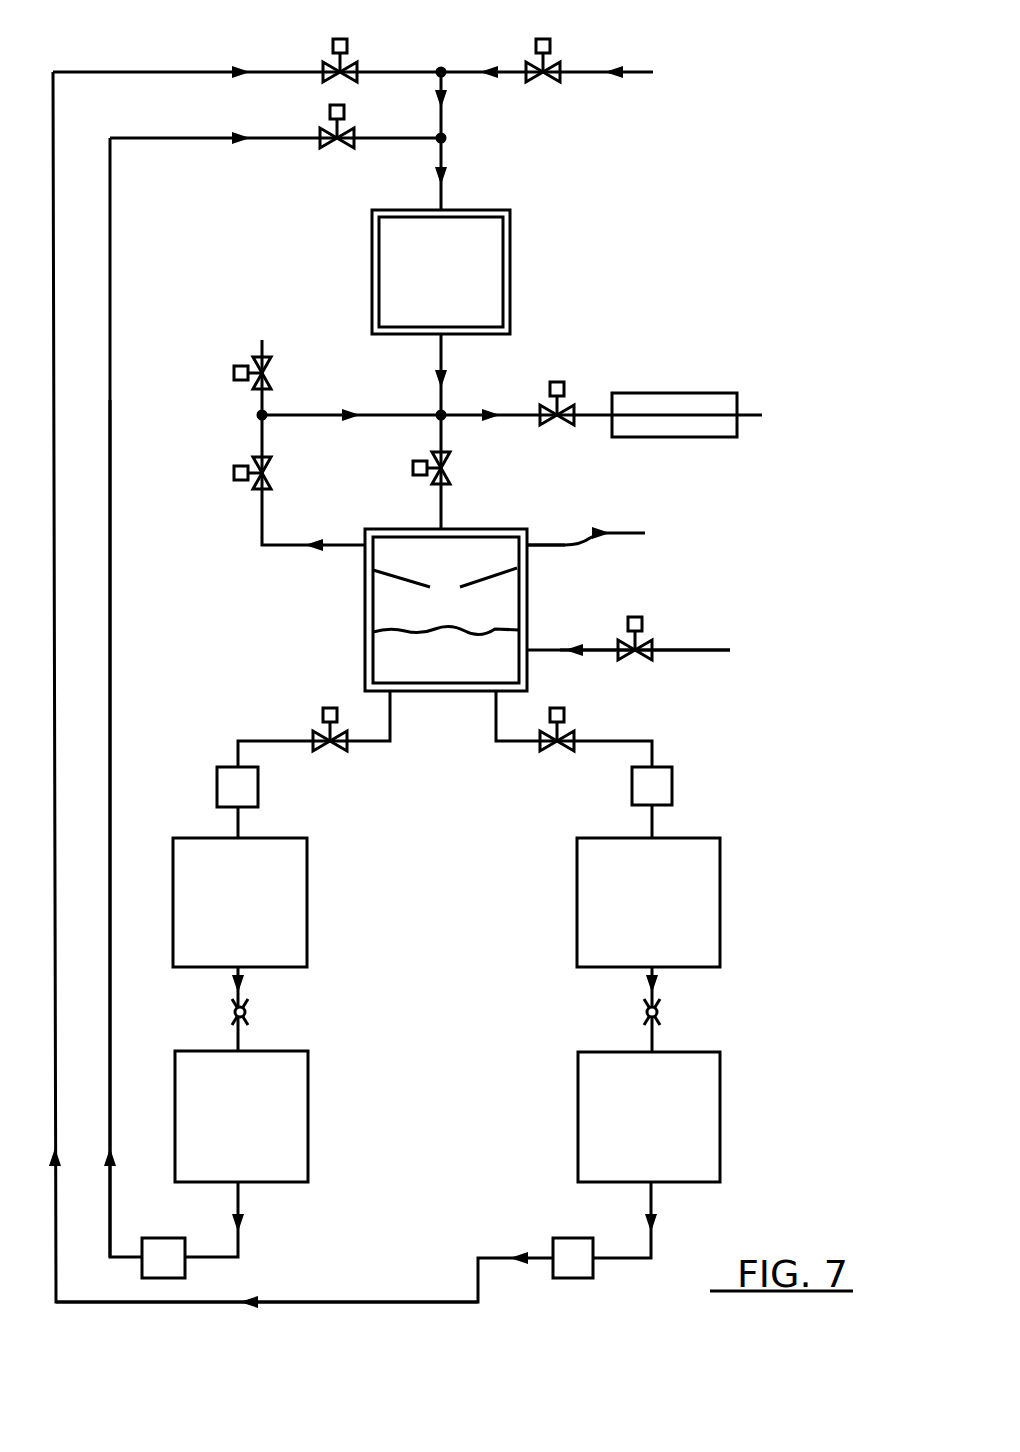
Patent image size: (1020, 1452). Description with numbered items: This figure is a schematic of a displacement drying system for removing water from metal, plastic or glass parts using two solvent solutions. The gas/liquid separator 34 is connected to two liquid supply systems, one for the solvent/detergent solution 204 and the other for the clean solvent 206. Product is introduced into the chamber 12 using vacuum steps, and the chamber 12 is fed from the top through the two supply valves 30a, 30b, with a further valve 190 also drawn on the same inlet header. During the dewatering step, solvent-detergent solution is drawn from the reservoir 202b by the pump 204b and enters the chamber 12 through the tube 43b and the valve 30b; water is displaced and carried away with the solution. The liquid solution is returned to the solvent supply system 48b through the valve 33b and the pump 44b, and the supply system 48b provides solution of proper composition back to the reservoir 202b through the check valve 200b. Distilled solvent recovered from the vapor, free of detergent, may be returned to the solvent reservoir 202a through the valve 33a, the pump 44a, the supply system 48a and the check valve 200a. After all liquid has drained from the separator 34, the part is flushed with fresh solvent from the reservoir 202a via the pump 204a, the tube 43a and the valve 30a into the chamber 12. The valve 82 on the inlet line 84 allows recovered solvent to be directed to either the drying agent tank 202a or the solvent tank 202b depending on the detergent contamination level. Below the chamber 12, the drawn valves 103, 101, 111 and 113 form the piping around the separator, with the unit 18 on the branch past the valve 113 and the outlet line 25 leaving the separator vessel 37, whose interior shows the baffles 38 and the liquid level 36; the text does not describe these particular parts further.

The chamber 12 is at (512, 252).
The condenser 18 is at (712, 374).
The vapor outlet line 25 is at (622, 522).
The valve 30a is at (330, 122).
The valve 30b is at (332, 58).
The valve 33a is at (320, 738).
The valve 33b is at (567, 738).
The gas/liquid separator 34 is at (352, 626).
The liquid solvent 36 is at (507, 607).
The separator 37 is at (510, 529).
The baffles 38 is at (505, 560).
The tube 43a is at (112, 1016).
The tube 43b is at (420, 1304).
The pump 44a is at (217, 780).
The pump 44b is at (672, 785).
The solvent supply system 48a is at (307, 856).
The solvent supply system 48b is at (720, 900).
The valve 82 is at (648, 634).
The inlet line 84 is at (598, 654).
The valve 101 is at (248, 470).
The valve 103 is at (250, 368).
The valve 111 is at (456, 466).
The valve 113 is at (547, 408).
The valve 190 is at (536, 58).
The check valve 200a is at (258, 1010).
The check valve 200b is at (668, 1010).
The solvent reservoir 202a is at (308, 1148).
The reservoir 202b is at (720, 1150).
The solvent/detergent solution supply system 204 is at (770, 862).
The pump 204a is at (178, 1224).
The pump 204b is at (565, 1238).
The clean solvent supply system 206 is at (400, 942).